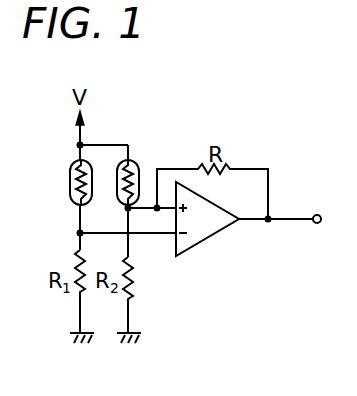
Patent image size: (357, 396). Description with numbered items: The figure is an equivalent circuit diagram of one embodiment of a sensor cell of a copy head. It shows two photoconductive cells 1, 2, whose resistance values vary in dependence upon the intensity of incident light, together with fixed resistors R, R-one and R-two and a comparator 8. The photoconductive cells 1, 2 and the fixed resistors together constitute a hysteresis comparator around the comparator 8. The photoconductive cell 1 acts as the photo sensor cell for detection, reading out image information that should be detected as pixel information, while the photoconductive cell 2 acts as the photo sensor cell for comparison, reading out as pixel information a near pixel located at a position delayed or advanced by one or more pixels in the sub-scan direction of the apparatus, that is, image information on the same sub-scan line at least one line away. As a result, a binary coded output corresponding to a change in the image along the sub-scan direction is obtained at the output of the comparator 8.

The photoconductive cell 1 is at (70, 179).
The photoconductive cell 2 is at (139, 167).
The comparator 8 is at (217, 233).